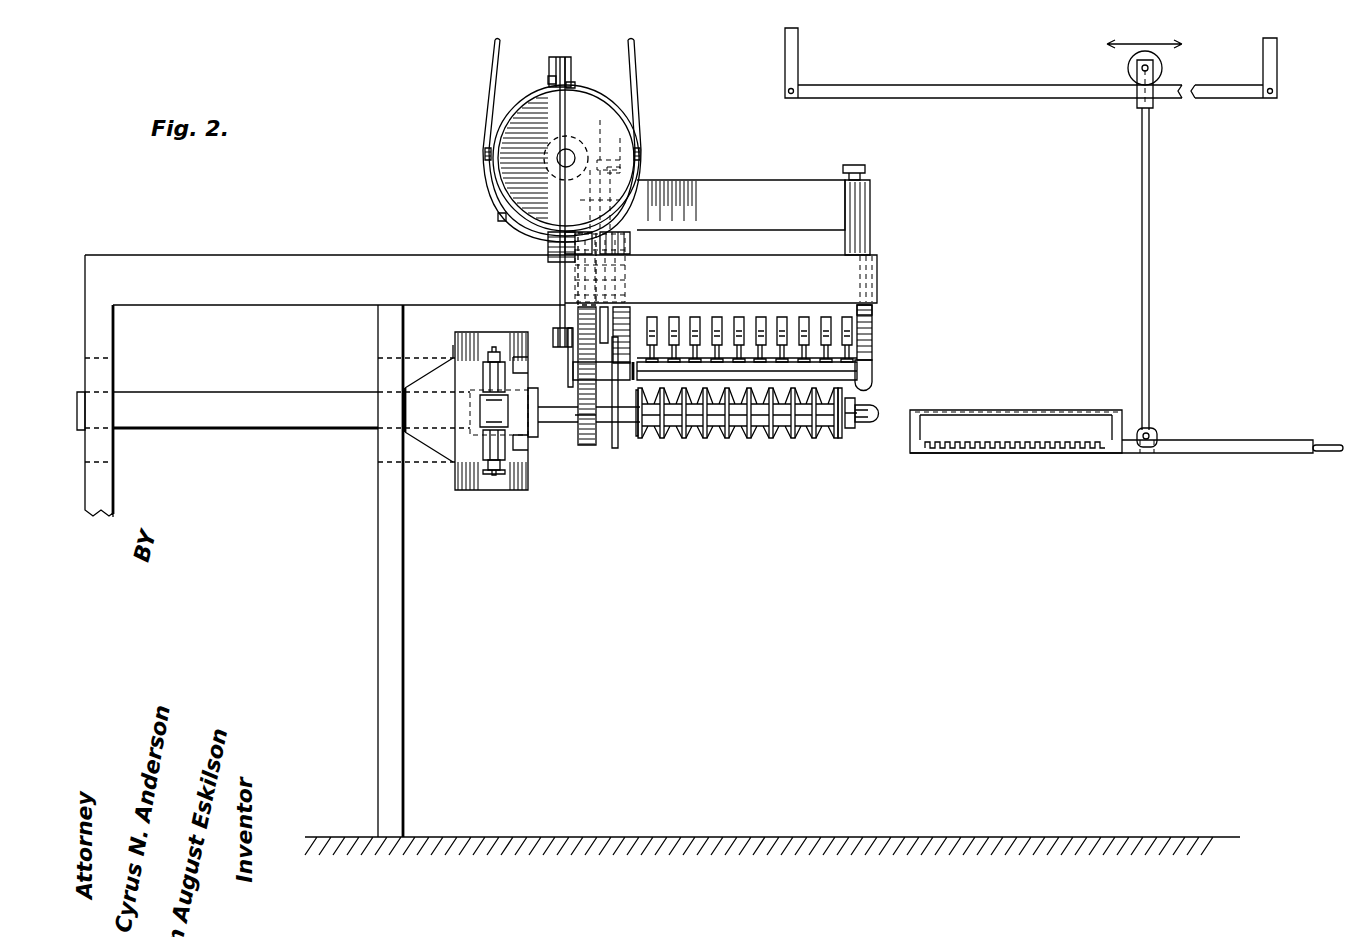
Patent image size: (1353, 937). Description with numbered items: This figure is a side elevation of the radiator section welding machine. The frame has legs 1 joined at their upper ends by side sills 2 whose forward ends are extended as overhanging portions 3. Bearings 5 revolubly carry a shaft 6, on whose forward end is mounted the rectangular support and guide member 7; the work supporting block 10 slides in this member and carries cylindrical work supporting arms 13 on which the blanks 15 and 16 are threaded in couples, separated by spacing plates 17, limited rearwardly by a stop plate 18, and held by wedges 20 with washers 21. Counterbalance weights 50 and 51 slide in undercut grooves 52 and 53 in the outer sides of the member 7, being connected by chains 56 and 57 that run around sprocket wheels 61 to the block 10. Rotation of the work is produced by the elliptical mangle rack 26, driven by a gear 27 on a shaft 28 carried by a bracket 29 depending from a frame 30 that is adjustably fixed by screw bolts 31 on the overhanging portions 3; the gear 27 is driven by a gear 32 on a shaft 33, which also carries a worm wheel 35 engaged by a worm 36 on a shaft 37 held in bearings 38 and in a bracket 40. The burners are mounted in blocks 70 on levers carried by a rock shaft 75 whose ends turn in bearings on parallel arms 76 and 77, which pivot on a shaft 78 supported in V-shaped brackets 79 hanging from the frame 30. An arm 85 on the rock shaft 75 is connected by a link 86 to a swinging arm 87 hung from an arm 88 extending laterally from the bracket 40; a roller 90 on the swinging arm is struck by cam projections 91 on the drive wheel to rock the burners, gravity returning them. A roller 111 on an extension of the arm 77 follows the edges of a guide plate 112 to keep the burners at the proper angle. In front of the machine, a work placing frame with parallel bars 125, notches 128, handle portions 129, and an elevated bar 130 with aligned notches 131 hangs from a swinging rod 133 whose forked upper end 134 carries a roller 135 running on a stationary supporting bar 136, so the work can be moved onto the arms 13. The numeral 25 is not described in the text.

The legs 1 is at (403, 733).
The side sills 2 is at (272, 255).
The overhanging portions 3 is at (877, 282).
The bearings 5 is at (378, 470).
The shaft 6 is at (265, 428).
The support and guide member 7 is at (538, 440).
The block 10 is at (560, 422).
The work supporting arms 13 is at (588, 447).
The blanks 15 is at (775, 438).
The blanks 16 is at (750, 438).
The spacing plates 17 is at (820, 438).
The stop plate 18 is at (645, 437).
The wedges 20 is at (870, 425).
The washers 21 is at (852, 430).
The post 25 is at (865, 325).
The mangle rack 26 is at (588, 445).
The gear 27 is at (598, 300).
The shaft 28 is at (620, 330).
The bracket 29 is at (605, 330).
The frame 30 is at (738, 190).
The adjusting screw bolts 31 is at (622, 140).
The gear 32 is at (602, 232).
The shaft 33 is at (598, 212).
The worm wheel 35 is at (548, 246).
The worm 36 is at (545, 165).
The shaft 37 is at (575, 150).
The bearings 38 is at (488, 127).
The bracket 40 is at (573, 82).
The counterbalance weight 50 is at (465, 340).
The counterbalance weight 51 is at (480, 478).
The undercut groove 52 is at (470, 360).
The undercut groove 53 is at (470, 465).
The chain 56 is at (505, 360).
The chain 57 is at (492, 462).
The sprocket wheels 61 is at (495, 475).
The blocks 70 is at (747, 376).
The rock shaft 75 is at (590, 378).
The arm 76 is at (868, 386).
The arm 77 is at (616, 444).
The shaft 78 is at (785, 372).
The brackets 79 is at (865, 350).
The arm 85 is at (568, 360).
The link 86 is at (553, 338).
The swinging arm 87 is at (560, 285).
The arm 88 is at (556, 57).
The roller 90 is at (556, 235).
The cam projections 91 is at (500, 220).
The roller 111 is at (640, 360).
The guide plate 112 is at (600, 414).
The parallel bars 125 is at (1125, 453).
The notches 128 is at (1075, 448).
The handle portions 129 is at (1325, 446).
The bar 130 is at (1085, 410).
The notches 131 is at (1020, 410).
The swinging rod 133 is at (1150, 240).
The forked upper end 134 is at (1130, 68).
The roller 135 is at (1160, 68).
The stationary supporting bar 136 is at (978, 92).